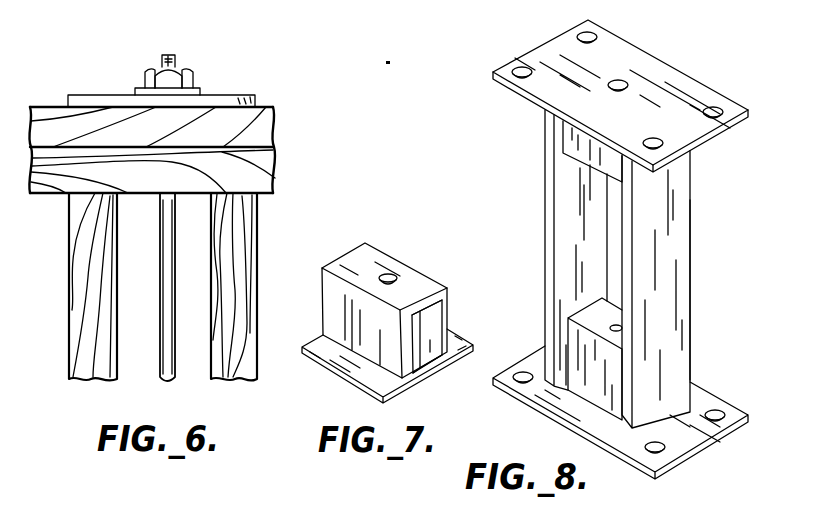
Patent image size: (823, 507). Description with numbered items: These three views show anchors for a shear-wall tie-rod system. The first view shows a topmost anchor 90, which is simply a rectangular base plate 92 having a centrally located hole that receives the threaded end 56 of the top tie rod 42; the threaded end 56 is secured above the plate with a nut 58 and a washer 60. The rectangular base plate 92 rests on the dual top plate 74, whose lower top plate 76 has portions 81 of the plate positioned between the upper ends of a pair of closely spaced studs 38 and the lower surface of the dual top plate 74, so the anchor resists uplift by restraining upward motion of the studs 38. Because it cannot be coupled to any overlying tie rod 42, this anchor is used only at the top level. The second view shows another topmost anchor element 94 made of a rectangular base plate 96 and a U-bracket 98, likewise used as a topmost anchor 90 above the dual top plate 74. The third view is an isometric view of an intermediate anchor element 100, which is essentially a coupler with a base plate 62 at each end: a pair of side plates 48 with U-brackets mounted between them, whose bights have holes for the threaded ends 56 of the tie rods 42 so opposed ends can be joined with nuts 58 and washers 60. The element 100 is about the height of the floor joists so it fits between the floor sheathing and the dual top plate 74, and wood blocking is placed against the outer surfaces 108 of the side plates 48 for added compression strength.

In FIG. 6, the studs 38 is at (82, 251).
In FIG. 6, the tie rod 42 is at (168, 353).
In FIG. 8, the side plates 48 is at (562, 192).
In FIG. 6, the threaded end 56 is at (171, 54).
In FIG. 6, the nut 58 is at (191, 71).
In FIG. 6, the washer 60 is at (139, 86).
In FIG. 8, the base plate 62 is at (685, 80).
In FIG. 6, the dual top plate 74 is at (285, 107).
In FIG. 6, the lower top plate 76 is at (262, 191).
In FIG. 8, the portions of base plate 81 is at (690, 435).
In FIG. 6, the topmost anchor 90 is at (261, 47).
In FIG. 6, the rectangular base plate 92 is at (241, 95).
In FIG. 7, the topmost anchor element 94 is at (394, 240).
In FIG. 7, the rectangular base plate 96 is at (455, 330).
In FIG. 7, the U-bracket 98 is at (418, 277).
In FIG. 8, the intermediate anchor element 100 is at (701, 190).
In FIG. 8, the outer surfaces 108 is at (753, 256).